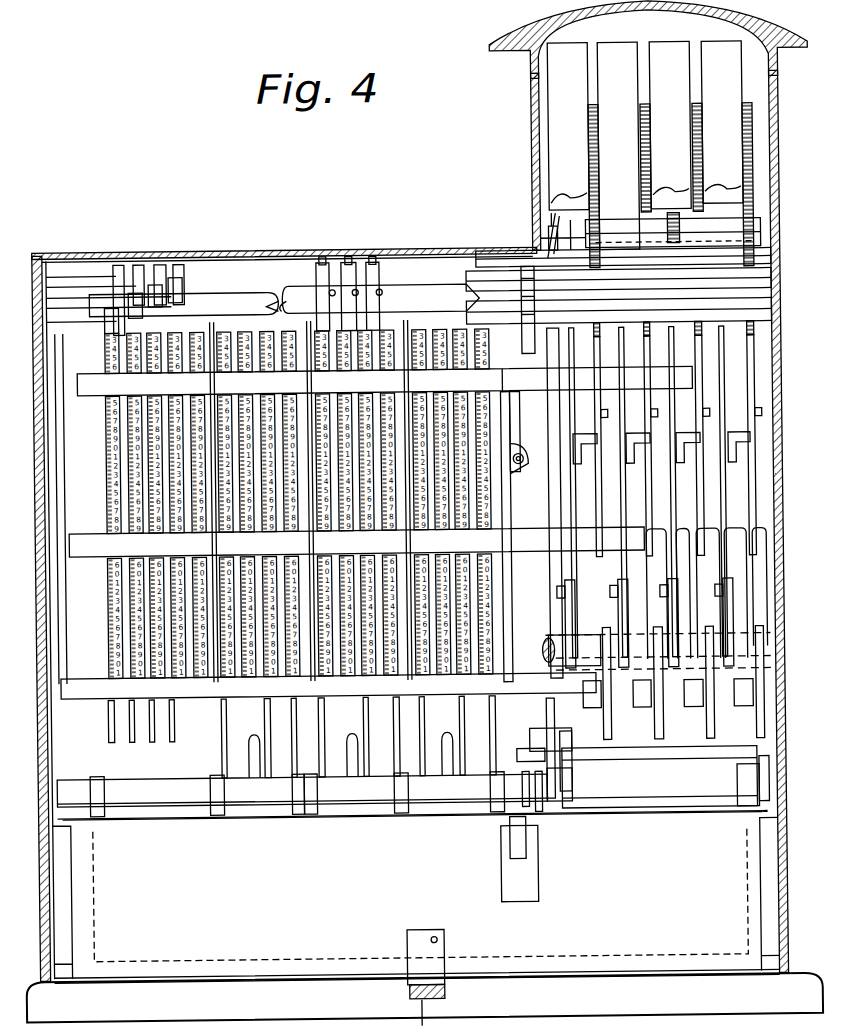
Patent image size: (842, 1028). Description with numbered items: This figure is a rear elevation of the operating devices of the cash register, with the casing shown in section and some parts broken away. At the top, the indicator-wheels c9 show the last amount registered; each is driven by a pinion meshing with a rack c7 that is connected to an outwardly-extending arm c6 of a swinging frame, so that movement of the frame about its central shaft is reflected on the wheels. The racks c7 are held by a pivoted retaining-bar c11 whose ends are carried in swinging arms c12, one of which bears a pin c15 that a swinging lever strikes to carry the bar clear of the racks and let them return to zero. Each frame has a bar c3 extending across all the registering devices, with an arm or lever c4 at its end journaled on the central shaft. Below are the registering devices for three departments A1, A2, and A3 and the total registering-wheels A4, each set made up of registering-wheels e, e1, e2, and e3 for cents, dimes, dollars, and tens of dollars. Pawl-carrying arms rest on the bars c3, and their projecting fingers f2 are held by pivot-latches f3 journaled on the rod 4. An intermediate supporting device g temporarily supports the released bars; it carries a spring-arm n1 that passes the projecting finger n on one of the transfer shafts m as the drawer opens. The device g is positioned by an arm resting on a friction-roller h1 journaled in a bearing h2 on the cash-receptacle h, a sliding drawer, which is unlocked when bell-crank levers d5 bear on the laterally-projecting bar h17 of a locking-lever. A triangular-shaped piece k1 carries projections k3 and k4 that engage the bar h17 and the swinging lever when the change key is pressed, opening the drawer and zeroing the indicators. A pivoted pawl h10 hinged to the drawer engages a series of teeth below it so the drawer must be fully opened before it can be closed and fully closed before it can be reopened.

The indicator-wheel c9 is at (575, 42).
The retaining-bar c11 is at (722, 234).
The pin c15 is at (560, 238).
The swinging arm c12 is at (770, 256).
The arm or lever c4 is at (558, 262).
The shaft or rod m is at (50, 320).
The bar c3 is at (205, 718).
The department registering device A1 is at (436, 340).
The department registering device A2 is at (320, 270).
The department registering device A3 is at (268, 310).
The total registering-wheels A4 is at (384, 381).
The registering-wheel e is at (734, 436).
The registering-wheel e1 is at (293, 535).
The registering-wheel e2 is at (312, 535).
The registering-wheel e3 is at (332, 535).
The projecting finger n is at (532, 356).
The spring-arm n1 is at (521, 536).
The intermediate supporting device g is at (512, 472).
The rack c7 is at (597, 350).
The outwardly-extending arm c6 is at (768, 448).
The bell-crank lever d5 is at (610, 726).
The projection k4 is at (530, 732).
The triangular-shaped piece k1 is at (552, 735).
The projection k3 is at (568, 738).
The laterally-projecting bar h17 is at (668, 758).
The projecting finger f2 is at (245, 745).
The pivot-latch f3 is at (240, 782).
The cash-receptacle h is at (413, 841).
The friction-roller h1 is at (507, 838).
The bearing h2 is at (536, 870).
The shaft or rod 4 is at (650, 808).
The pivoted pawl h10 is at (403, 960).